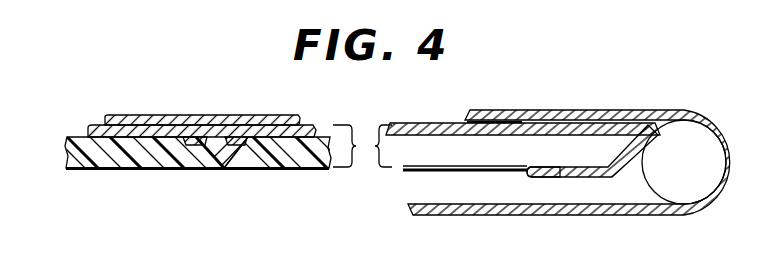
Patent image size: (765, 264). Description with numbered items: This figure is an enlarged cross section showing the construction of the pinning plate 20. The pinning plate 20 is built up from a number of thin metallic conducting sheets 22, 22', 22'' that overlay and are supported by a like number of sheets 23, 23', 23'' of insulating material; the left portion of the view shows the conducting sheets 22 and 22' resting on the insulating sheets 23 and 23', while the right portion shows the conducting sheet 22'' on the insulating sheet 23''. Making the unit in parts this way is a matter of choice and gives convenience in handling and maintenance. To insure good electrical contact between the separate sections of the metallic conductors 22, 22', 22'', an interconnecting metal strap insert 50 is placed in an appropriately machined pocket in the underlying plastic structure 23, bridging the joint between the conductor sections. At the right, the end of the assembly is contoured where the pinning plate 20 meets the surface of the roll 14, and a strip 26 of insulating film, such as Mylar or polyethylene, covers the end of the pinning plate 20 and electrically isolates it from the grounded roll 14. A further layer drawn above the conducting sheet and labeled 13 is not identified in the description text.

The top cover layer 13 is at (133, 116).
The thin metallic conducting sheet 22 is at (169, 123).
The sheet of insulating material 23 is at (135, 169).
The sheet of insulating material 23' is at (289, 168).
The interconnecting metal strap insert 50 is at (189, 166).
The thin metallic conducting sheet 22' is at (327, 105).
The pinning plate 20 is at (362, 146).
The thin metallic conducting sheet 22'' is at (523, 111).
The sheet of insulating material 23'' is at (510, 166).
The strip of insulating film 26 is at (543, 178).
The roll 14 is at (696, 163).